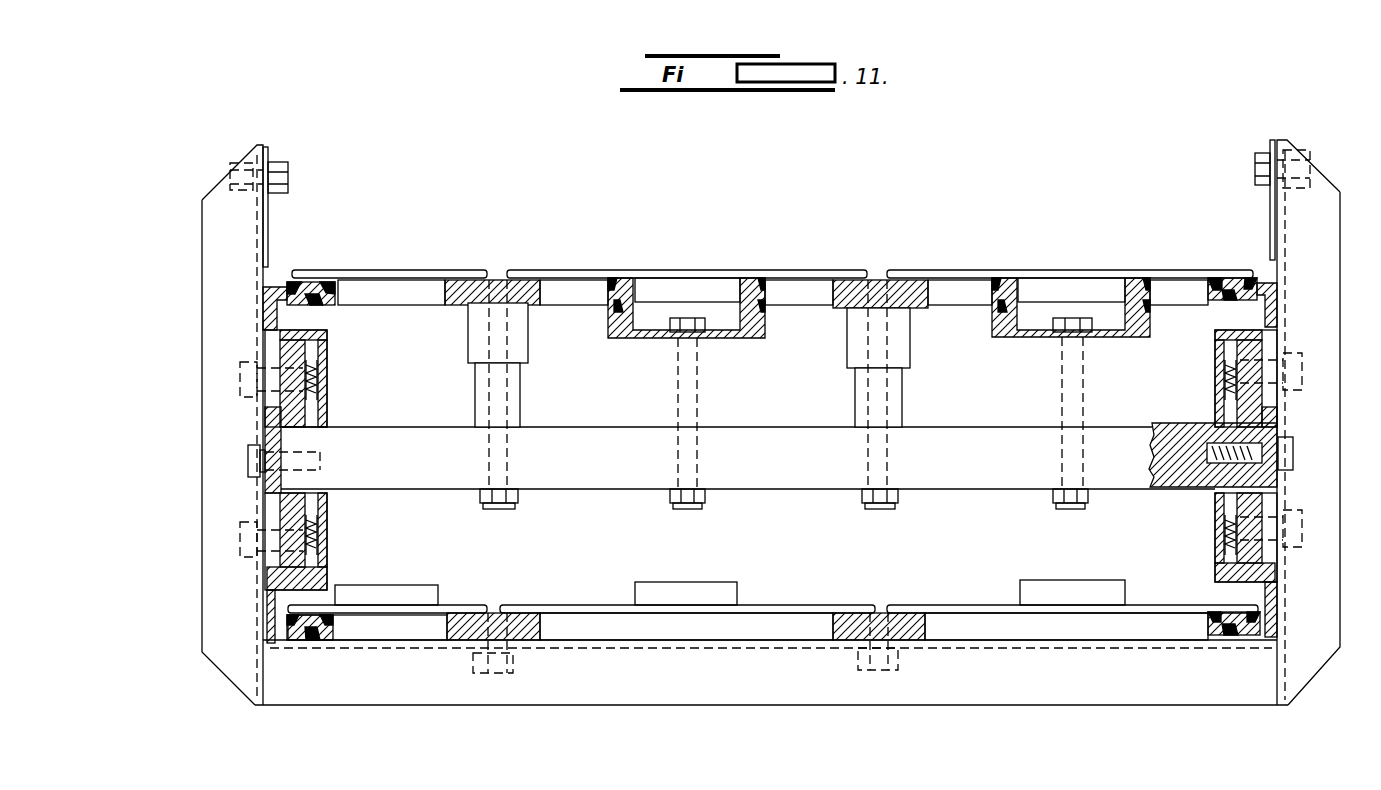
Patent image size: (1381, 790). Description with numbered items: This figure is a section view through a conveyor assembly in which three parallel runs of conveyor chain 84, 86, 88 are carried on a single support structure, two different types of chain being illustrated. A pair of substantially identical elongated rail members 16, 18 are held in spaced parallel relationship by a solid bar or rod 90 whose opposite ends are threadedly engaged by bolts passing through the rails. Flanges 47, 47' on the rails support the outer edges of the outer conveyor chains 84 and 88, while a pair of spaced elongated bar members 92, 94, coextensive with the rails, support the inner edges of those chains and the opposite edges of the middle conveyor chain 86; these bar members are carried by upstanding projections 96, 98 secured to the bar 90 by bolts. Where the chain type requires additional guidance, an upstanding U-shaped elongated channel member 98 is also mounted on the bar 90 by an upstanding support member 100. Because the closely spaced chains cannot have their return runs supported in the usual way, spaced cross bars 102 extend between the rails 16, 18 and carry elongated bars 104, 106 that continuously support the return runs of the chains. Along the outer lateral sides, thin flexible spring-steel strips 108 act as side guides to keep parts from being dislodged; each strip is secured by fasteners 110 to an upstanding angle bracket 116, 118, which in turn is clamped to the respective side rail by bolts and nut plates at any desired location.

The rail member 16 is at (262, 430).
The rail member 18 is at (1280, 416).
The flange 47 is at (299, 278).
The flange 47' is at (1242, 276).
The conveyor chain 84 is at (402, 268).
The conveyor chain 86 is at (702, 268).
The conveyor chain 88 is at (1082, 268).
The solid bar or rod 90 is at (790, 480).
The elongated bar member 92 is at (528, 340).
The elongated bar member 94 is at (905, 350).
The upstanding projection 96 is at (520, 400).
The upstanding projection / U-shaped channel member 98 is at (903, 402).
The upstanding support member 100 is at (708, 400).
The cross bar 102 is at (1005, 692).
The elongated bar 104 is at (528, 627).
The elongated bar 106 is at (912, 627).
The elongated strip 108 is at (270, 230).
The fastener 110 is at (288, 176).
The angle bracket 116 is at (1332, 268).
The angle bracket 118 is at (218, 276).